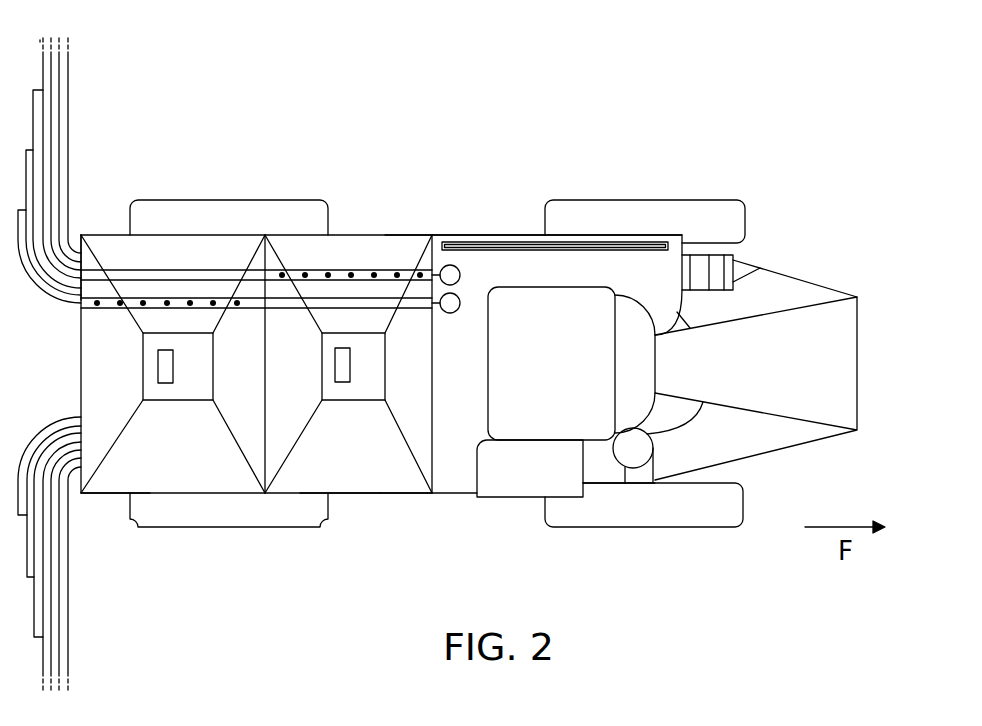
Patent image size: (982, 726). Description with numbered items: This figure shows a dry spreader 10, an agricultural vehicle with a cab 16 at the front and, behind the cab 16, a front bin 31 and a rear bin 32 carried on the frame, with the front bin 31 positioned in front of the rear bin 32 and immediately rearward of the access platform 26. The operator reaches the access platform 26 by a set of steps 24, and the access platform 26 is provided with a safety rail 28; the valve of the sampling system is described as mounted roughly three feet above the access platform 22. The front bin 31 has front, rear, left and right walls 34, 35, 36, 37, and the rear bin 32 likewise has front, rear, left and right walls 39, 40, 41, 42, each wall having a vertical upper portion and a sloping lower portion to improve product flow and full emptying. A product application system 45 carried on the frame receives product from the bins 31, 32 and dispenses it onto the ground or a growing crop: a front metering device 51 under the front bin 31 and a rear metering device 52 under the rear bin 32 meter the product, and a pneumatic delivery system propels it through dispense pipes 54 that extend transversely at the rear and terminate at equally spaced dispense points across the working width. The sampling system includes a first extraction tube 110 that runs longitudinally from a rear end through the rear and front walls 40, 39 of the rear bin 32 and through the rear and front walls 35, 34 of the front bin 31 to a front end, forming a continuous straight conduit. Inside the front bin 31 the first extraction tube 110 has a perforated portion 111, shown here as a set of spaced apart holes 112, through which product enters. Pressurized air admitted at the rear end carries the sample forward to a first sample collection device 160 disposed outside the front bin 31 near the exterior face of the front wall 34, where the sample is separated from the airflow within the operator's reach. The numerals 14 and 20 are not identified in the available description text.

The dry spreader 10 is at (757, 178).
The wheels 14 is at (200, 200).
The cab 16 is at (571, 363).
The rear implement hitch 20 is at (825, 303).
The access platform 22 is at (493, 500).
The set of steps 24 is at (753, 268).
The access platform 26 is at (515, 235).
The safety rail 28 is at (472, 242).
The front bin 31 is at (410, 495).
The rear bin 32 is at (115, 495).
The front wall 34 is at (433, 418).
The rear wall 35 is at (293, 364).
The left wall 36 is at (423, 235).
The right wall 37 is at (343, 495).
The front wall 39 is at (239, 364).
The rear wall 40 is at (112, 364).
The left wall 41 is at (104, 233).
The right wall 42 is at (178, 429).
The product application system 45 is at (138, 82).
The front metering device 51 is at (345, 372).
The rear metering device 52 is at (172, 370).
The dispense pipes 54 is at (70, 135).
The first extraction tube 110 is at (345, 268).
The perforated portion 111 is at (292, 268).
The spaced apart holes 112 is at (396, 268).
The first sample collection device 160 is at (460, 275).